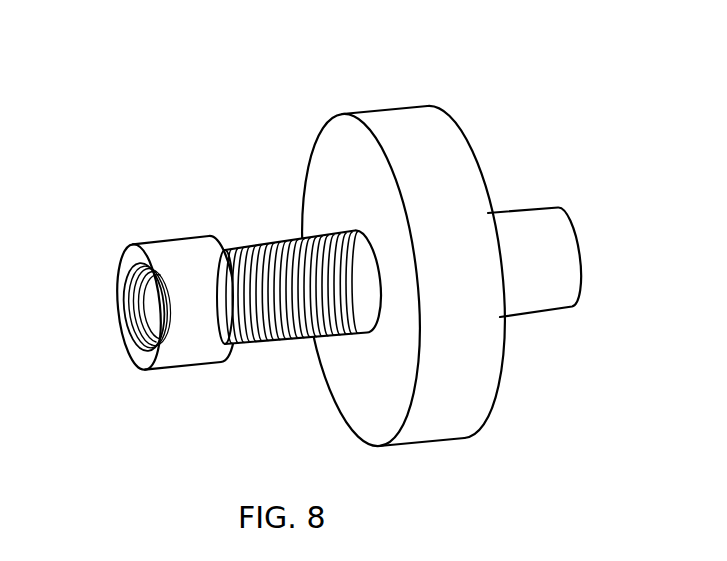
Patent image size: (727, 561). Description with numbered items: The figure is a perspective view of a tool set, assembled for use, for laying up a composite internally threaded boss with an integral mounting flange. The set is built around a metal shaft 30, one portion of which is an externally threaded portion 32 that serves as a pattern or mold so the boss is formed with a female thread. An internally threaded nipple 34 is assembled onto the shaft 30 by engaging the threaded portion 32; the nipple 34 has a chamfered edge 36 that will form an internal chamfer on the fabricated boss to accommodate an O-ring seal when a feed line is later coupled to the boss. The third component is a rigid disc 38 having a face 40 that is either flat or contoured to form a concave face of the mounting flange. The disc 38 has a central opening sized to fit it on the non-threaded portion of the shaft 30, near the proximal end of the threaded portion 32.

The shaft 30 is at (503, 207).
The threaded portion 32 is at (277, 248).
The nipple 34 is at (162, 240).
The chamfered edge 36 is at (222, 240).
The disc 38 is at (407, 142).
The face 40 is at (322, 186).